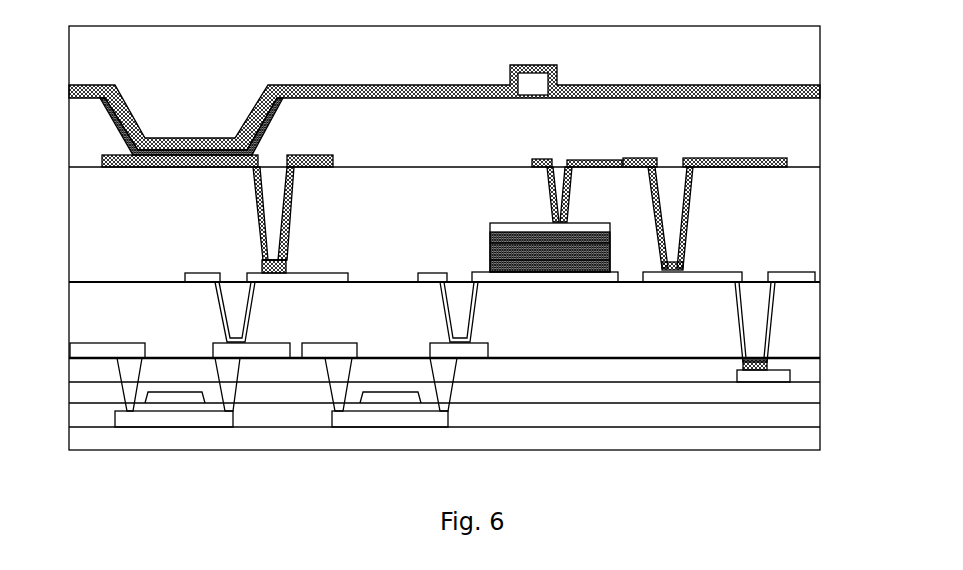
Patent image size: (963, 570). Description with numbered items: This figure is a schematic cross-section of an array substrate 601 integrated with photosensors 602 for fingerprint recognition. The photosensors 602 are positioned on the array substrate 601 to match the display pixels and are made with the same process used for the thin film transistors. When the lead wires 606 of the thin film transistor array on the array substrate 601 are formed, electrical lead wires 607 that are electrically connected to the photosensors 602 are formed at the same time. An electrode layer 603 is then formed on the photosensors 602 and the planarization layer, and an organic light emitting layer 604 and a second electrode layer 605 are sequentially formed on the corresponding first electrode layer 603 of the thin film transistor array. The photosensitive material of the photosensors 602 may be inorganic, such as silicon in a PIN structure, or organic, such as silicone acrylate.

The array substrate 601 is at (826, 378).
The photosensors 602 is at (503, 222).
The electrode layer 603 is at (98, 155).
The organic light emitting layer 604 is at (262, 133).
The second electrode layer 605 is at (822, 90).
The lead wires 606 is at (290, 210).
The electrical lead wires 607 is at (565, 204).